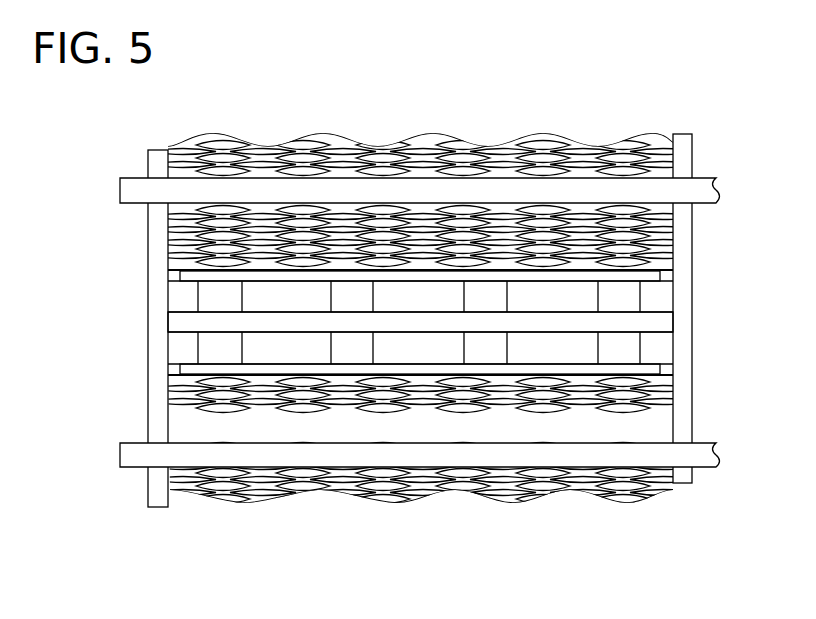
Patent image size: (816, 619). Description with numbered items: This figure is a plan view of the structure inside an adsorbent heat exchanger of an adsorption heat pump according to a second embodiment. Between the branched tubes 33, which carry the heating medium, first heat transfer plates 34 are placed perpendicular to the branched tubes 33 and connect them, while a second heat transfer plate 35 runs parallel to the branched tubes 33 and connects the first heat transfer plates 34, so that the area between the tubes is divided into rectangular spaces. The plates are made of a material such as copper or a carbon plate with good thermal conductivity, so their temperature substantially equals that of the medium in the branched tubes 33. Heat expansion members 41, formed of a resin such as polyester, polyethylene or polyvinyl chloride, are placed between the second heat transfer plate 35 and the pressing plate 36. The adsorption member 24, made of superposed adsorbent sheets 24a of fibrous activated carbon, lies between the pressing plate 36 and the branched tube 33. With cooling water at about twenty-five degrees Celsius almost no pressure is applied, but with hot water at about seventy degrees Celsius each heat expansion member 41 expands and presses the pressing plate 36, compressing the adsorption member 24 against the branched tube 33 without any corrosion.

The adsorption member 24 is at (423, 317).
The adsorbent sheet 24a is at (423, 215).
The branched tube 33 is at (703, 181).
The first heat transfer plate 34 is at (152, 233).
The second heat transfer plate 35 is at (672, 321).
The pressing plate 36 is at (662, 271).
The heat expansion member 41 is at (246, 298).